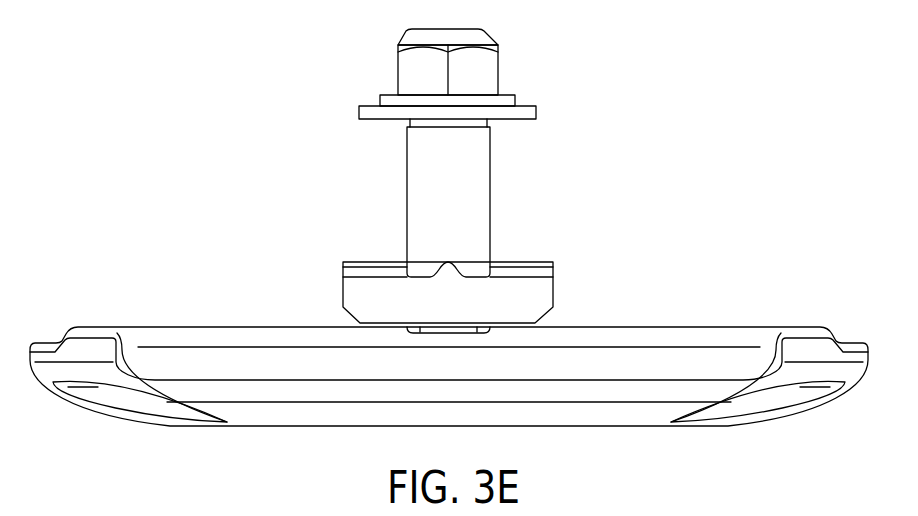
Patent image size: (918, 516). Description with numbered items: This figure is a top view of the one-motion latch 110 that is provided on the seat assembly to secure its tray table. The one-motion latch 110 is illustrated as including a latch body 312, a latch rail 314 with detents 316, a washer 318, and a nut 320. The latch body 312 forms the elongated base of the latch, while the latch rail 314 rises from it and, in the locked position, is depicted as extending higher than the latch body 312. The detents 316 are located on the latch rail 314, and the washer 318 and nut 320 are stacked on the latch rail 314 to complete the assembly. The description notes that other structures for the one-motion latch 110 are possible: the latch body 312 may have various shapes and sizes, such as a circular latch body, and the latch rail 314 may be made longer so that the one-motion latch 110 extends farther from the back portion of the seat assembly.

The one-motion latch 110 is at (330, 65).
The latch body 312 is at (670, 334).
The latch rail 314 is at (413, 153).
The detents 316 is at (442, 270).
The washer 318 is at (536, 114).
The nut 320 is at (487, 63).